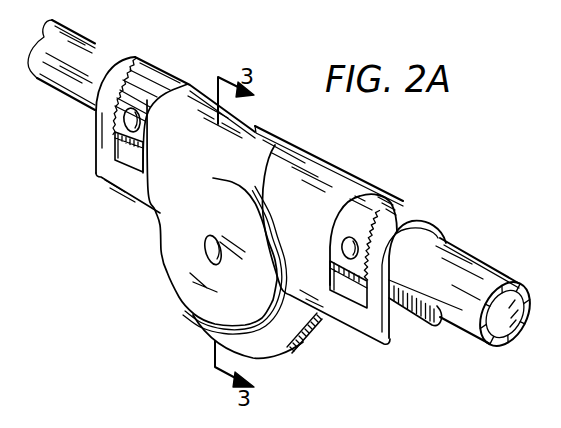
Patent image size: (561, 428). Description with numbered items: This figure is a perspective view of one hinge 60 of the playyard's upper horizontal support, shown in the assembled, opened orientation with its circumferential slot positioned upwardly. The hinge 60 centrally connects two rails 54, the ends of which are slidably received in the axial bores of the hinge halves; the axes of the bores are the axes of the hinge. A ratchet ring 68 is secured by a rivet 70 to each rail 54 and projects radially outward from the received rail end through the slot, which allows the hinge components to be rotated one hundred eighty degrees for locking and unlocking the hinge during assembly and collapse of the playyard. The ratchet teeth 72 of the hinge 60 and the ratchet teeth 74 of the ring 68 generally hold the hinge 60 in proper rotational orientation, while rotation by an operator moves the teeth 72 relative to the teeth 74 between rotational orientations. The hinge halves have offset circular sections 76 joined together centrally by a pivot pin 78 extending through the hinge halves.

The rail 54 is at (84, 34).
The hinge 60 is at (150, 236).
The ratchet ring 68 is at (158, 72).
The rivet 70 is at (112, 149).
The ratchet teeth 72 is at (410, 212).
The ratchet teeth 74 is at (105, 109).
The offset circular section 76 is at (285, 340).
The pivot pin 78 is at (216, 263).